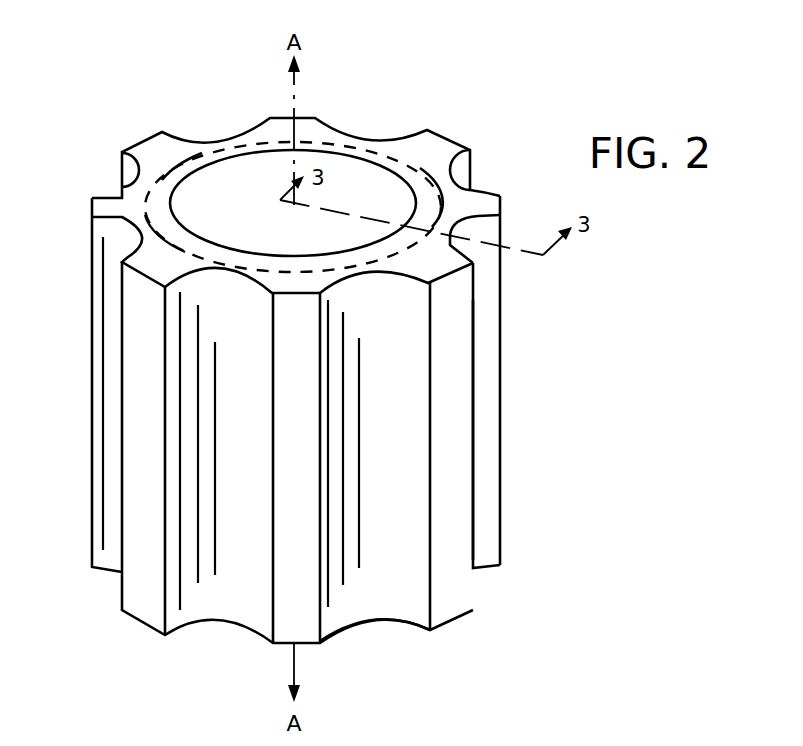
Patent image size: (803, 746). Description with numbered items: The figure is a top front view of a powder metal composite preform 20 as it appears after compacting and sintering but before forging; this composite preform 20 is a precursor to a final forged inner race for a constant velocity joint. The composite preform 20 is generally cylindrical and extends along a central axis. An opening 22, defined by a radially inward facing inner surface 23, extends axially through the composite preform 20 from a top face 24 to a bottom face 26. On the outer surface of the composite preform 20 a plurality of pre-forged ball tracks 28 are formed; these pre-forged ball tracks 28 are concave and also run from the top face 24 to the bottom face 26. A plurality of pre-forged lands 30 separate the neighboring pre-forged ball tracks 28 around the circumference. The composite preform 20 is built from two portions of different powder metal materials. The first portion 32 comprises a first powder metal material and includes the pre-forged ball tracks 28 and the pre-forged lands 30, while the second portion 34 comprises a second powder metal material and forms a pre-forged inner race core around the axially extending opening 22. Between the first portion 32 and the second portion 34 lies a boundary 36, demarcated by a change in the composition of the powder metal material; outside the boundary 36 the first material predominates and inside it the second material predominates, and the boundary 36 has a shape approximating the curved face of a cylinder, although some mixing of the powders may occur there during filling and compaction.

The composite preform 20 is at (390, 109).
The opening 22 is at (247, 180).
The inner surface 23 is at (380, 187).
The top face 24 is at (437, 157).
The bottom face 26 is at (373, 622).
The pre-forged ball tracks 28 is at (378, 443).
The pre-forged lands 30 is at (447, 447).
The first portion 32 is at (165, 266).
The second portion 34 is at (173, 180).
The boundary 36 is at (118, 190).